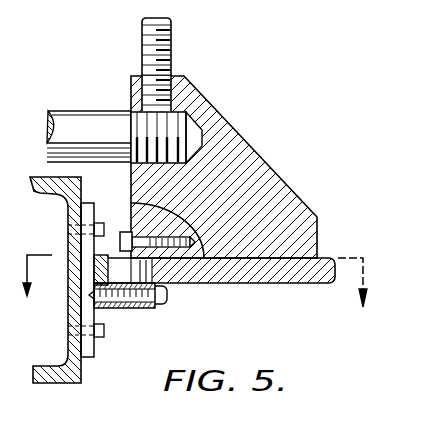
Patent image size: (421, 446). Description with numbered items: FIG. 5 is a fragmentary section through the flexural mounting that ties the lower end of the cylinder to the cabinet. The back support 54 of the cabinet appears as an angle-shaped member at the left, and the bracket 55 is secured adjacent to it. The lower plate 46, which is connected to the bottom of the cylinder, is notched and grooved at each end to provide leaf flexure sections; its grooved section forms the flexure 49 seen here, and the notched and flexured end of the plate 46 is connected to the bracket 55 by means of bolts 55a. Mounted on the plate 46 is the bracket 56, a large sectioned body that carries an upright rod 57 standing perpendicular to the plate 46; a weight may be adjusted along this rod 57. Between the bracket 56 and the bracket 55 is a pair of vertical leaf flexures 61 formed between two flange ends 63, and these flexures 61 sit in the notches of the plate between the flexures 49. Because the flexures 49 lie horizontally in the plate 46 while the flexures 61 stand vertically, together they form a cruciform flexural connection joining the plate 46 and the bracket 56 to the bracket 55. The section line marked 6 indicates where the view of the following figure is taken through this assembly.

The lower plate 46 is at (324, 258).
The groove 49 is at (150, 278).
The back support 54 is at (35, 190).
The bracket 55 is at (94, 271).
The bolts 55a is at (117, 242).
The bracket 56 is at (240, 133).
The upright rod 57 is at (172, 52).
The vertical leaf flexures 61 is at (193, 272).
The flange ends 63 is at (186, 213).
The section line 6- 6 is at (193, 295).